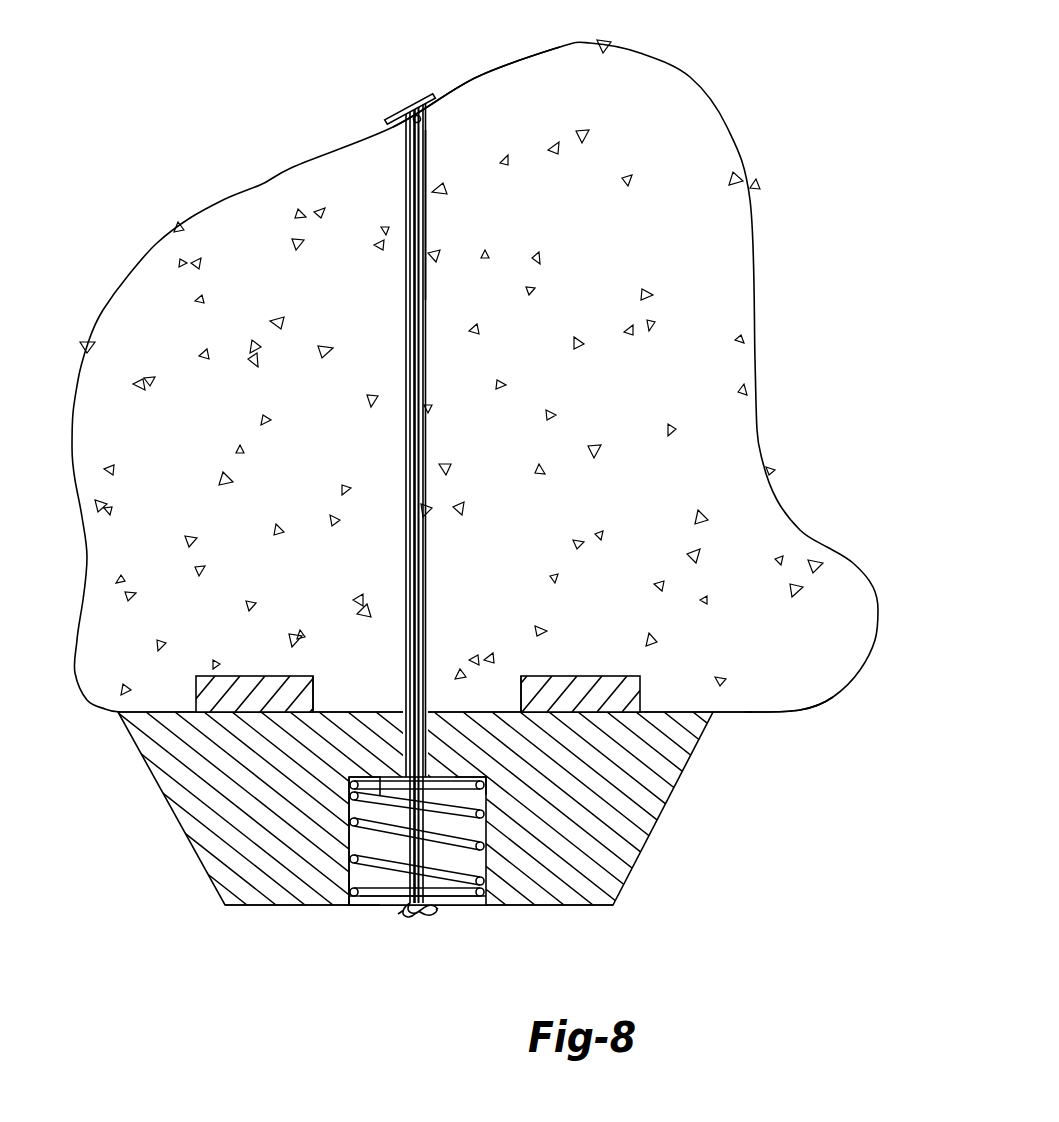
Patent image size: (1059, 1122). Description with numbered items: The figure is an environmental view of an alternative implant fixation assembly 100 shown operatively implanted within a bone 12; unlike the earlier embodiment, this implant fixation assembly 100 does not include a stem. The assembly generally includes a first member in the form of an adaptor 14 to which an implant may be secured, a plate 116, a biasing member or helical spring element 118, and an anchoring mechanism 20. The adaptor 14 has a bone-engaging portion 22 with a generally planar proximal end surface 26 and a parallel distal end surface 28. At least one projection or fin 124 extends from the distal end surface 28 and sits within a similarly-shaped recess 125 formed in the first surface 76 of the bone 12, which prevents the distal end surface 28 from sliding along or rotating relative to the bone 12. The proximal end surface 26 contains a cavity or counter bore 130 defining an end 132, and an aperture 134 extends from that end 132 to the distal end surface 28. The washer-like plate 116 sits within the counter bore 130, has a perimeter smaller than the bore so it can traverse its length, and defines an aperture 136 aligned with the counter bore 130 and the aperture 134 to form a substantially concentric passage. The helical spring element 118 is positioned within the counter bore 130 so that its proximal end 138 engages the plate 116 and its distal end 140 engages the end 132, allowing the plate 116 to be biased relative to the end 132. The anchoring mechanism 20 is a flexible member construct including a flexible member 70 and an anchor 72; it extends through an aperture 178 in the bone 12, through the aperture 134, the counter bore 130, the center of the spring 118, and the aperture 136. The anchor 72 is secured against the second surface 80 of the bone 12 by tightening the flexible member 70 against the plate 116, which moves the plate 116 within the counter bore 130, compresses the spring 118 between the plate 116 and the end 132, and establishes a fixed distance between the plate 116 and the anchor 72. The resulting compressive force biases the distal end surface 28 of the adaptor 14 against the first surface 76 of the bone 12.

The implant fixation assembly 100 is at (705, 52).
The bone 12 is at (200, 238).
The second surface of the bone 80 is at (480, 77).
The distal end surface 28 is at (150, 712).
The first surface of the bone 76 is at (747, 713).
The adaptor 14 is at (155, 836).
The bone-engaging portion 22 is at (637, 818).
The proximal end surface 26 is at (230, 905).
The fin 124 is at (227, 690).
The recess 125 is at (316, 690).
The counter bore 130 is at (490, 863).
The helical spring element 118 is at (457, 873).
The distal end of the spring element 140 is at (376, 780).
The end of the counter bore 132 is at (467, 778).
The aperture 134 is at (378, 777).
The plate 116 is at (395, 907).
The proximal end of the spring element 138 is at (365, 893).
The flexible member 70 is at (424, 249).
The aperture in the bone 178 is at (424, 177).
The anchor 72 is at (413, 108).
The aperture of the plate 136 is at (437, 908).
The anchoring mechanism 20 is at (395, 172).